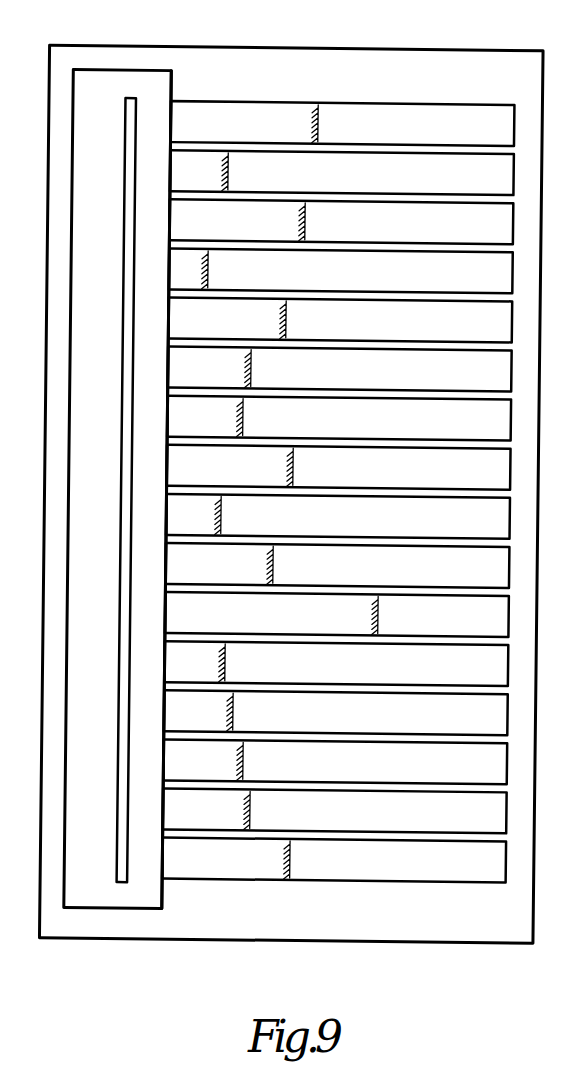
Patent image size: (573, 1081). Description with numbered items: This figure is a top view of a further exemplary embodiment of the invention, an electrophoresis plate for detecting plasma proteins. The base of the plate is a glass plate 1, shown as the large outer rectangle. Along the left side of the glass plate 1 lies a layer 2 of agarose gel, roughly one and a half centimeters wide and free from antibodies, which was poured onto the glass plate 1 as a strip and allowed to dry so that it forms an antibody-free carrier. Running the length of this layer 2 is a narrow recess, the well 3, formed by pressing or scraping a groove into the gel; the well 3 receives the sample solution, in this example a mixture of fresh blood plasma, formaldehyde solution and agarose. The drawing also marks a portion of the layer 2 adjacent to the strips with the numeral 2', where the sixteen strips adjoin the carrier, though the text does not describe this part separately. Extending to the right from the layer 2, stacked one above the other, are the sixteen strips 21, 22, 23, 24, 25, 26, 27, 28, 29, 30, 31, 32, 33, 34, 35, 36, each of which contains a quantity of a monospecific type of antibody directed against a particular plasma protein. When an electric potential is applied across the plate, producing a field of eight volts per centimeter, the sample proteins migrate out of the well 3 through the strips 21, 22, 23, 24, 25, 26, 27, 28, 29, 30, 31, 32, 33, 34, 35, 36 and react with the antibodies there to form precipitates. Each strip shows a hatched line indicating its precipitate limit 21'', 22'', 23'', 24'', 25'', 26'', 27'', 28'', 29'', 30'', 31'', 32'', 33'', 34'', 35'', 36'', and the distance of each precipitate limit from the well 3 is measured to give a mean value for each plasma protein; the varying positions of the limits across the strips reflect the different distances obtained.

The glass plate 1 is at (50, 185).
The layer 2 is at (88, 489).
The side wall of guide member 2' is at (192, 454).
The well 3 is at (124, 265).
The strip 21 is at (342, 123).
The strip 22 is at (342, 172).
The strip 23 is at (341, 221).
The strip 24 is at (341, 270).
The strip 25 is at (340, 320).
The strip 26 is at (340, 369).
The strip 27 is at (339, 418).
The strip 28 is at (339, 467).
The strip 29 is at (338, 516).
The strip 30 is at (337, 565).
The strip 31 is at (337, 614).
The strip 32 is at (336, 663).
The strip 33 is at (336, 712).
The strip 34 is at (335, 761).
The strip 35 is at (335, 810).
The strip 36 is at (334, 860).
The precipitate limit 21'' is at (367, 124).
The precipitate limit 22'' is at (275, 172).
The precipitate limit 23'' is at (345, 222).
The precipitate limit 24'' is at (248, 270).
The precipitate limit 25'' is at (323, 320).
The precipitate limit 26'' is at (288, 368).
The precipitate limit 27'' is at (284, 417).
The precipitate limit 28'' is at (333, 467).
The precipitate limit 29'' is at (258, 515).
The precipitate limit 30'' is at (317, 565).
The precipitate limit 31'' is at (415, 615).
The precipitate limit 32'' is at (264, 663).
The precipitate limit 33'' is at (270, 712).
The precipitate limit 34'' is at (276, 761).
The precipitate limit 35'' is at (290, 810).
The precipitate limit 36'' is at (329, 860).